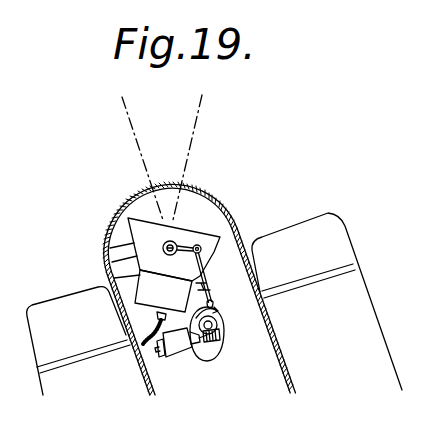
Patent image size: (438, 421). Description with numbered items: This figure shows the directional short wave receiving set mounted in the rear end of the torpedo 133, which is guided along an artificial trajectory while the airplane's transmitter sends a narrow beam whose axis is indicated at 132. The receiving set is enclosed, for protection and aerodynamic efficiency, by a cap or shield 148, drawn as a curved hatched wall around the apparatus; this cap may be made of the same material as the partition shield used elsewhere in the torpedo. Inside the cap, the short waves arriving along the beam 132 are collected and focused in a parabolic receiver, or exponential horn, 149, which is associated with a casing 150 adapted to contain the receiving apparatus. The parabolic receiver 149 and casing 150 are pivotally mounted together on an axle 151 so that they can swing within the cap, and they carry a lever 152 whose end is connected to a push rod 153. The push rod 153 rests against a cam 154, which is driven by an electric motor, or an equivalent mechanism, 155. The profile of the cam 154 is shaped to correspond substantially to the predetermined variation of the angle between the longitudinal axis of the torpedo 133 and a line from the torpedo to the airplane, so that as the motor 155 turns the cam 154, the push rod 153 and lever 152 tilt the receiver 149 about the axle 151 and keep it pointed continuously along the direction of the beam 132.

The axis of the beam 132 is at (199, 113).
The torpedo 133 is at (245, 242).
The cap or shield 148 is at (201, 193).
The parabolic receiver 149 is at (130, 223).
The casing 150 is at (150, 287).
The axle 151 is at (160, 247).
The lever 152 is at (188, 246).
The push rod 153 is at (213, 298).
The cam 154 is at (220, 353).
The electric motor 155 is at (175, 353).